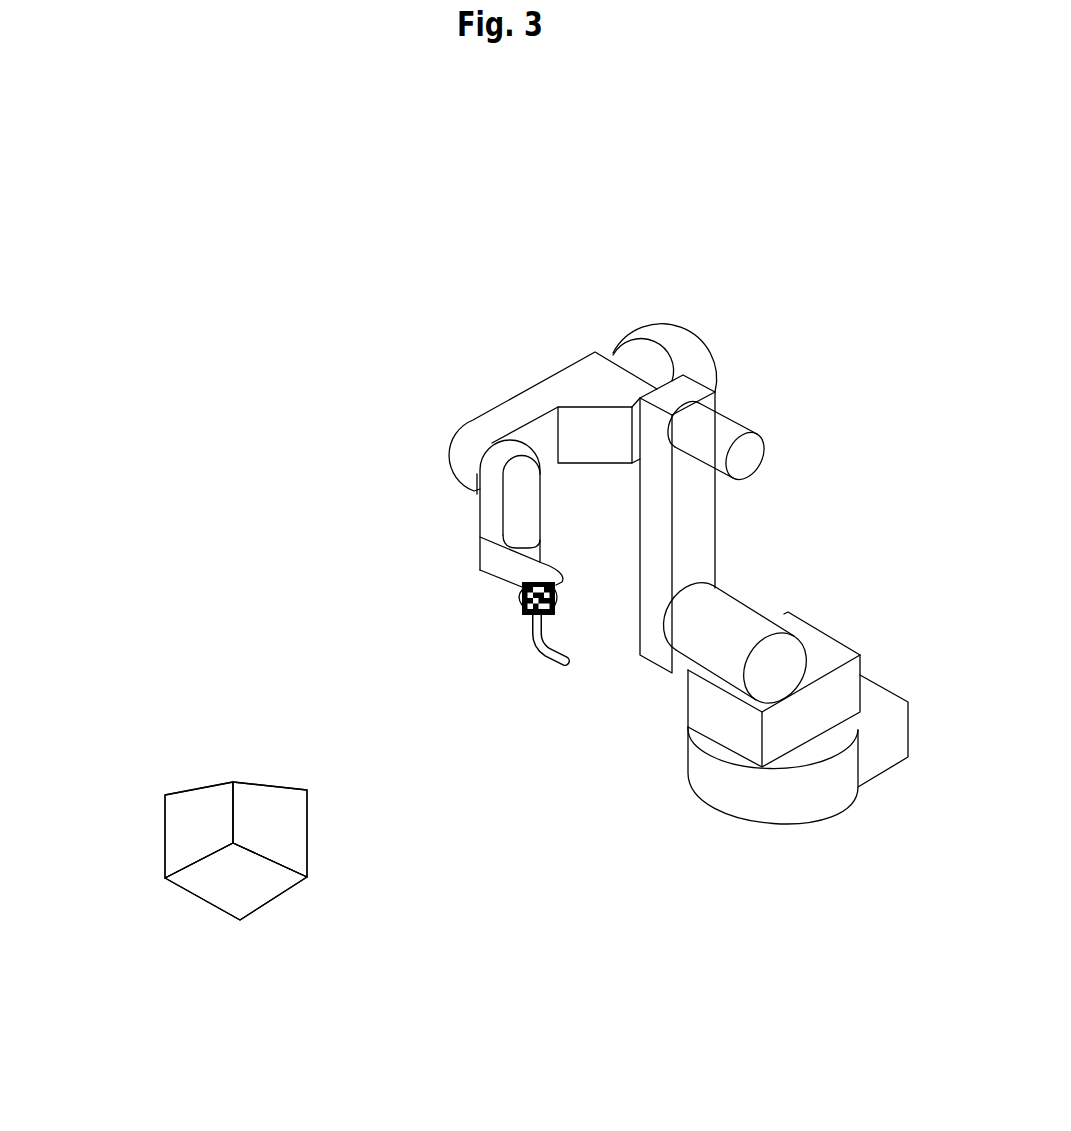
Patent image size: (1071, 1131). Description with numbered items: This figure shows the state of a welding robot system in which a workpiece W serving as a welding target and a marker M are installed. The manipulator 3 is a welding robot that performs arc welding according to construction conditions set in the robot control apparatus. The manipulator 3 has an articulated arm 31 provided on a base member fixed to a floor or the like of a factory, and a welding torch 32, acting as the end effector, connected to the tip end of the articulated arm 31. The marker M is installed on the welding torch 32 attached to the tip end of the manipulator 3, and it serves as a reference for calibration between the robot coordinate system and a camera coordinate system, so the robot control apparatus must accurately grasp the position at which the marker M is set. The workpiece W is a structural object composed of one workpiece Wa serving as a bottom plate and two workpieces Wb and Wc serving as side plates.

The manipulator 3 is at (678, 546).
The articulated arm 31 is at (492, 420).
The welding torch 32 is at (565, 573).
The marker M is at (520, 601).
The workpiece W is at (217, 824).
The workpiece Wa is at (248, 882).
The workpiece Wb is at (190, 832).
The workpiece Wc is at (270, 808).